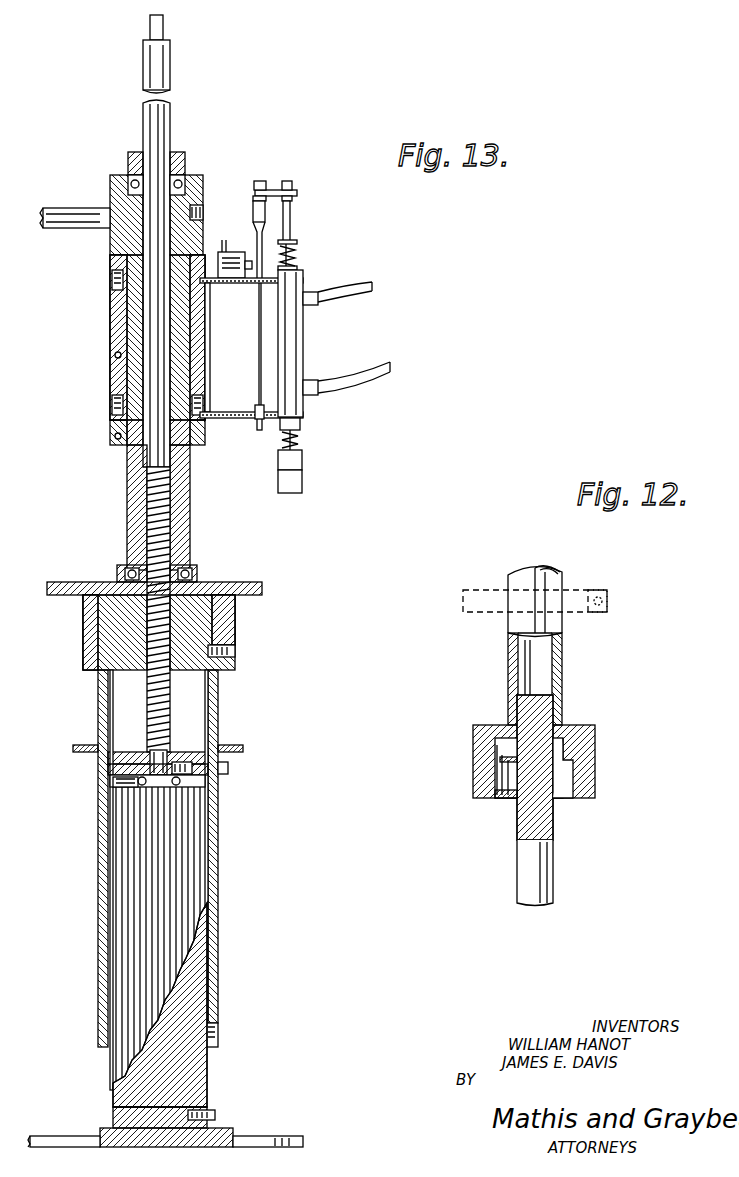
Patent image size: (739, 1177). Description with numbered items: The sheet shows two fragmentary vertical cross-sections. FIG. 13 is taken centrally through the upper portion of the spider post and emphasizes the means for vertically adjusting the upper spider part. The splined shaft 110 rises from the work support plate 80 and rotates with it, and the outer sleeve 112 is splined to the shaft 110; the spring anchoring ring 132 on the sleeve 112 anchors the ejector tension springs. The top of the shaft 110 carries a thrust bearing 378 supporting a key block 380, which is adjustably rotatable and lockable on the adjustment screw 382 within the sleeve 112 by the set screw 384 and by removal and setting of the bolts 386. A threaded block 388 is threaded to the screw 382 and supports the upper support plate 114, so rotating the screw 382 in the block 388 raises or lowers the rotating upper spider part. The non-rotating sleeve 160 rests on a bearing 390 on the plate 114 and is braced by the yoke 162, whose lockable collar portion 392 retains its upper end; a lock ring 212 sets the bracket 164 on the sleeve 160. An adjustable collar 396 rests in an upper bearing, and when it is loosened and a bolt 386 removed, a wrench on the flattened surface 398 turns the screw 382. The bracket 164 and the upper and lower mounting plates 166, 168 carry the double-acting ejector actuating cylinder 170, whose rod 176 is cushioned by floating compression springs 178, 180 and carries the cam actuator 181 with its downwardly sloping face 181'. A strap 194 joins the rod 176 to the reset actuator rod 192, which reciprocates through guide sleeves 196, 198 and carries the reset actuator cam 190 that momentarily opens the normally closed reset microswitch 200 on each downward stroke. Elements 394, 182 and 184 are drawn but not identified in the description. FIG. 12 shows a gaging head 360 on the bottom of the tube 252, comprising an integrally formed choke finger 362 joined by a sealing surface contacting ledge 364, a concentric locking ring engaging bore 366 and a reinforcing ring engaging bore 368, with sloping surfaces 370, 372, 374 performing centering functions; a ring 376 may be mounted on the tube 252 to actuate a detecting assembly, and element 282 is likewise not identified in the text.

In FIG. 13, the flattened surface 398 is at (170, 31).
In FIG. 13, the adjustable collar 396 is at (133, 152).
In FIG. 13, the bearing block 394 is at (122, 175).
In FIG. 13, the lockable collar portion 392 is at (200, 178).
In FIG. 13, the yoke 162 is at (62, 208).
In FIG. 13, the adjustment screw 382 is at (150, 375).
In FIG. 13, the adjustable bracket 164 is at (110, 315).
In FIG. 13, the lock ring 212 is at (110, 436).
In FIG. 13, the non-rotating sleeve 160 is at (127, 497).
In FIG. 13, the set screw 384 is at (178, 752).
In FIG. 13, the bearing 390 is at (198, 575).
In FIG. 13, the upper support plate 114 is at (65, 582).
In FIG. 13, the threaded block 388 is at (235, 620).
In FIG. 13, the outer sleeve 112 is at (98, 868).
In FIG. 13, the key block 380 is at (98, 735).
In FIG. 13, the spring anchoring ring 132 is at (240, 745).
In FIG. 13, the bolts 386 is at (215, 760).
In FIG. 13, the thrust bearing 378 is at (110, 778).
In FIG. 13, the splined shaft 110 is at (113, 1050).
In FIG. 13, the work support plate 80 is at (62, 1128).
In FIG. 13, the strap 194 is at (270, 192).
In FIG. 13, the reset actuator cam 190 is at (253, 212).
In FIG. 13, the reset actuator rod 192 is at (257, 238).
In FIG. 13, the cylinder rod 176 is at (290, 222).
In FIG. 13, the floating compression spring 178 is at (300, 256).
In FIG. 13, the reset microswitch 200 is at (240, 244).
In FIG. 13, the guide sleeve 196 is at (251, 345).
In FIG. 13, the upper mounting plate 166 is at (210, 285).
In FIG. 13, the lower mounting plate 168 is at (215, 412).
In FIG. 13, the ejector actuating cylinder 170 is at (300, 335).
In FIG. 13, the hose 182 is at (340, 290).
In FIG. 13, the hose 184 is at (348, 378).
In FIG. 13, the guide sleeve 198 is at (257, 425).
In FIG. 13, the floating compression spring 180 is at (302, 438).
In FIG. 13, the cam actuator 181 is at (309, 460).
In FIG. 13, the downwardly sloping face 181' is at (313, 481).
In FIG. 12, the tube 252 is at (508, 622).
In FIG. 12, the arm 282 is at (465, 606).
In FIG. 12, the ring 376 is at (605, 592).
In FIG. 12, the gaging head 360 is at (475, 745).
In FIG. 12, the choke finger 362 is at (517, 858).
In FIG. 12, the sloping surface 370 is at (520, 903).
In FIG. 12, the sloping surface 374 is at (500, 770).
In FIG. 12, the sloping surface 372 is at (500, 797).
In FIG. 12, the locking ring engaging bore 366 is at (565, 750).
In FIG. 12, the reinforcing ring engaging bore 368 is at (595, 775).
In FIG. 12, the sealing surface contacting ledge 364 is at (595, 728).